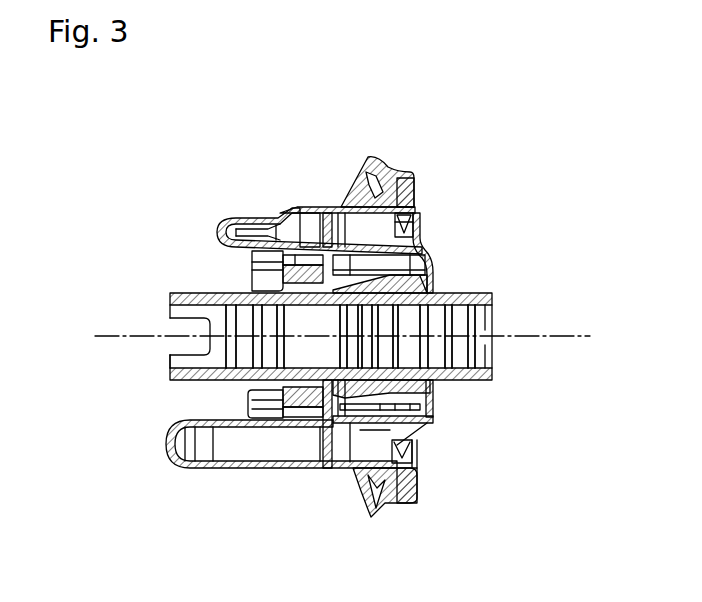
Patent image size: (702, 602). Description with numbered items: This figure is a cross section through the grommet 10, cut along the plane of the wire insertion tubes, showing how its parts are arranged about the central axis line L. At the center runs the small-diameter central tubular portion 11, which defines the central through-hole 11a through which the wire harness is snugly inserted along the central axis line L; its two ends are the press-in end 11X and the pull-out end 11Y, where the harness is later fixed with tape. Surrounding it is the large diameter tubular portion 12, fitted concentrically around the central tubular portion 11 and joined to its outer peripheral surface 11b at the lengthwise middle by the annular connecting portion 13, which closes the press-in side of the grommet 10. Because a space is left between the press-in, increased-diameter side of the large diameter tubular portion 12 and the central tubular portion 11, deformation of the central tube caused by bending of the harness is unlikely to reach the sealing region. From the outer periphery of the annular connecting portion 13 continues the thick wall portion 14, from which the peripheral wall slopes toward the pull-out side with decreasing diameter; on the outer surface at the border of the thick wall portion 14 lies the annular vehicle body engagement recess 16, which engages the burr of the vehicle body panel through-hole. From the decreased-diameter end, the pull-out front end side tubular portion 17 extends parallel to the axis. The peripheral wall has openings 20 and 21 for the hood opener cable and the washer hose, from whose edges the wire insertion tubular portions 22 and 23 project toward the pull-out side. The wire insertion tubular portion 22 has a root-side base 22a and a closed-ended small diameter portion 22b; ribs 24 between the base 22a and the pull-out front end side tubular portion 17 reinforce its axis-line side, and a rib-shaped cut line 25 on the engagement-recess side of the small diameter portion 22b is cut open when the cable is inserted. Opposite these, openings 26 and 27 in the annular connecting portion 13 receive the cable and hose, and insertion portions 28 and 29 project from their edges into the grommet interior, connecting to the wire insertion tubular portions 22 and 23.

The grommet 10 is at (112, 144).
The central tubular portion 11 is at (476, 378).
The central through-hole 11a is at (485, 316).
The outer peripheral surface 11b is at (385, 373).
The press-in end 11X is at (488, 350).
The pull-out end 11Y is at (170, 368).
The large diameter tubular portion 12 is at (317, 212).
The annular connecting portion 13 is at (410, 275).
The thick wall portion 14 is at (405, 176).
The vehicle body engagement recess 16 is at (374, 160).
The pull-out front end side tubular portion 17 is at (252, 286).
The opening 20 is at (338, 207).
The opening 21 is at (336, 442).
The wire insertion tubular portion 22 is at (277, 170).
The base 22a is at (298, 208).
The small diameter portion 22b is at (266, 220).
The wire insertion tubular portion 23 is at (233, 470).
The rib 24 is at (250, 262).
The cut line 25 is at (240, 218).
The opening 26 is at (405, 213).
The opening 27 is at (360, 447).
The insertion portion 28 is at (378, 232).
The insertion portion 29 is at (405, 450).
The central axis line L is at (331, 336).